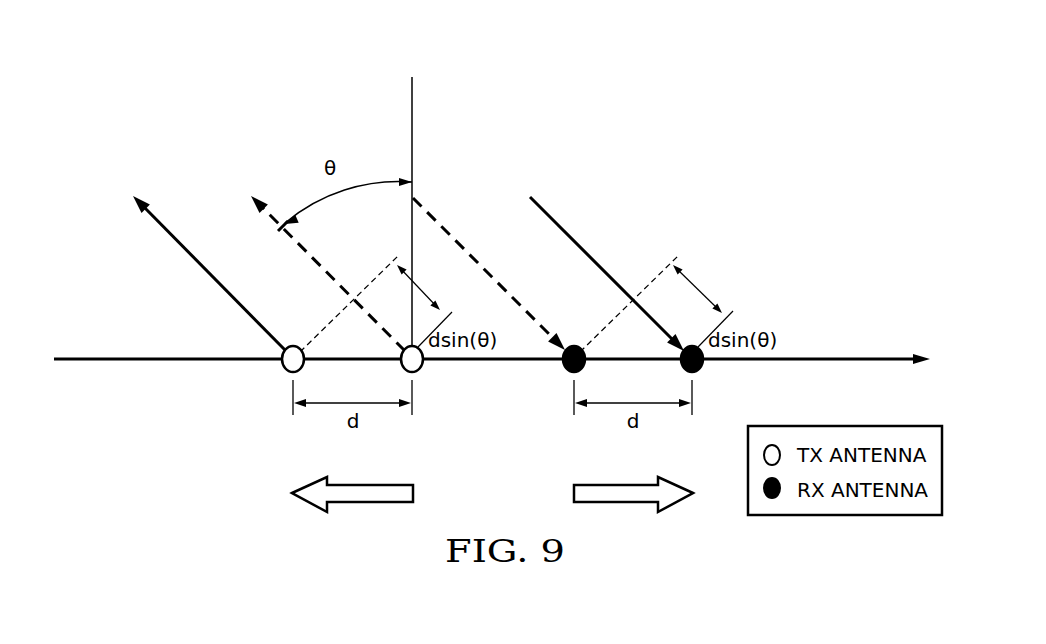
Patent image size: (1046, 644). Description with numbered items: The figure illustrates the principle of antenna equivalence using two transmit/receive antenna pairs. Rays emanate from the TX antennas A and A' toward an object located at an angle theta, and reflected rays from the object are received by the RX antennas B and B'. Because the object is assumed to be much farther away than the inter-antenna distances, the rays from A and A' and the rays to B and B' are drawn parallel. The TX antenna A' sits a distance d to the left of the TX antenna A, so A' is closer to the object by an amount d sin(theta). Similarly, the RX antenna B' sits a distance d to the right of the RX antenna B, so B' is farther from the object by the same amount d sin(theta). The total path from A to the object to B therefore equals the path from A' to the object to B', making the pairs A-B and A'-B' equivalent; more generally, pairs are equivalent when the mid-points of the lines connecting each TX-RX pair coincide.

The TX antenna A' is at (293, 405).
The TX antenna A is at (412, 405).
The RX antenna B is at (574, 405).
The RX antenna B' is at (692, 405).